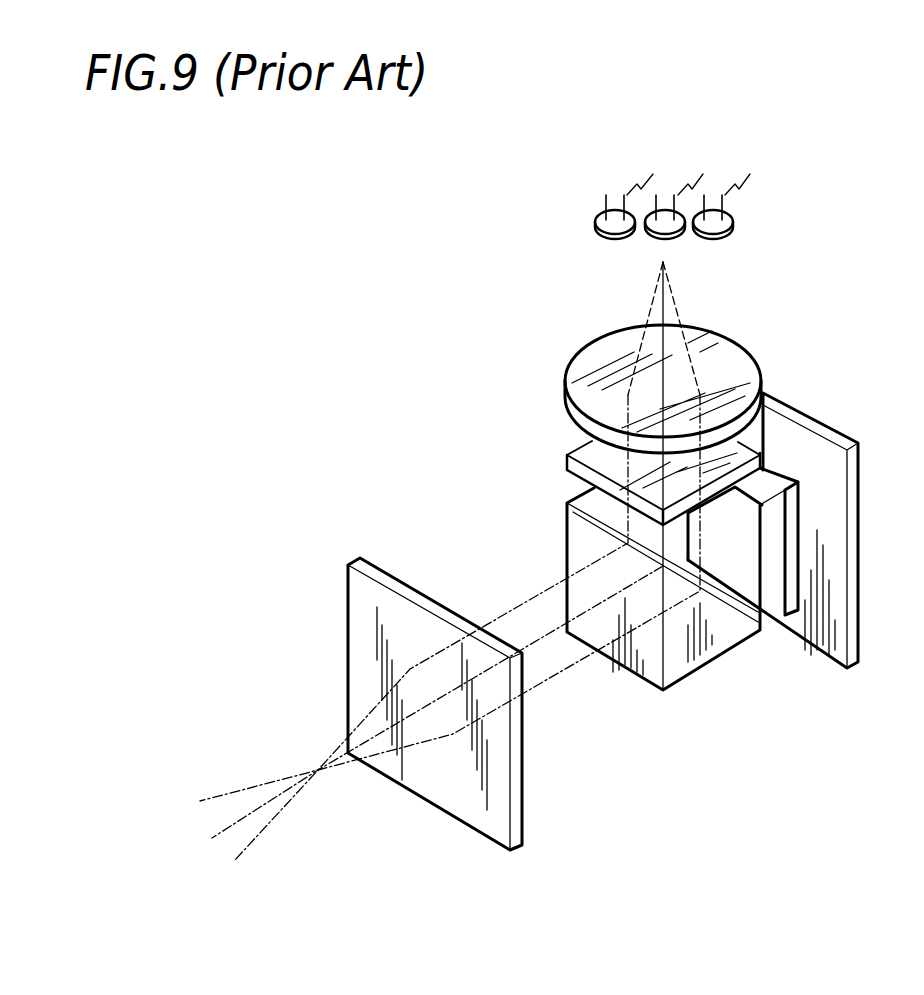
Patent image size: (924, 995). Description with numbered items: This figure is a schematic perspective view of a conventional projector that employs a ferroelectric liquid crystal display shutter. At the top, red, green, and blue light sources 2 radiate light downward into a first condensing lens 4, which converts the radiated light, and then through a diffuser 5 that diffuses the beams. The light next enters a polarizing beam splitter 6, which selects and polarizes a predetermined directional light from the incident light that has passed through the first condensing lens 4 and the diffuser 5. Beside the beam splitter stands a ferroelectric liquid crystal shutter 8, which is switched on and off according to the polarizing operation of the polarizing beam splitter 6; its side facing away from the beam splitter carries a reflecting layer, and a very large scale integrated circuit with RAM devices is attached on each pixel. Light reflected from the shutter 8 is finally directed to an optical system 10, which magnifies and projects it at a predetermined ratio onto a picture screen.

The light sources 2 is at (748, 214).
The first condensing lens 4 is at (741, 351).
The diffuser 5 is at (565, 459).
The polarizing beam splitter 6 is at (705, 655).
The ferroelectric liquid crystal shutter 8 is at (836, 531).
The optical system 10 is at (503, 808).